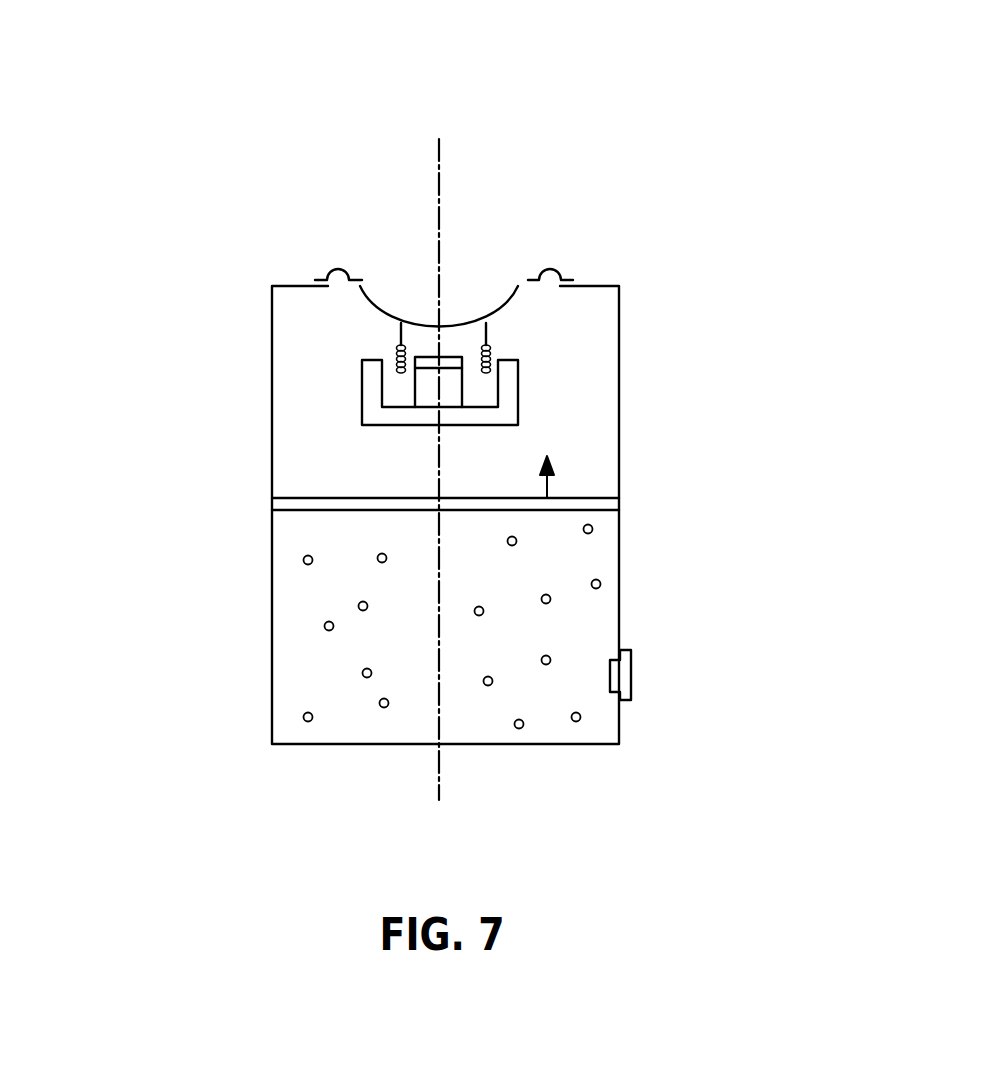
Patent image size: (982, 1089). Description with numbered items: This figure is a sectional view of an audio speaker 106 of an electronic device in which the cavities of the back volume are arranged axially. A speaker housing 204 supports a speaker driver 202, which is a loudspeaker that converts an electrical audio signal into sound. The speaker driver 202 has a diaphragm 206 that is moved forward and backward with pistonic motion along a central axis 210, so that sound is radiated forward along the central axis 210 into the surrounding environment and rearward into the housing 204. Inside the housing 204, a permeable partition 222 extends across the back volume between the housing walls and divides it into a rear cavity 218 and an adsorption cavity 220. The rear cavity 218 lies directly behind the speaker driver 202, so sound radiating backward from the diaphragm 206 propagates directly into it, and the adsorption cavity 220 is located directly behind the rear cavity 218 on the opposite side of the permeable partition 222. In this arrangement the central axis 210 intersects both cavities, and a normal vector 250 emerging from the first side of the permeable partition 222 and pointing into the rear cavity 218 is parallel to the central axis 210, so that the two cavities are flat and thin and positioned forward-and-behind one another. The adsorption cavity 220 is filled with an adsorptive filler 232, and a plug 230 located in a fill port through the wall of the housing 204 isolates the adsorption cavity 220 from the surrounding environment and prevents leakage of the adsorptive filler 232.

The audio speaker 106 is at (640, 66).
The speaker driver 202 is at (341, 314).
The speaker housing 204 is at (619, 367).
The diaphragm 206 is at (472, 265).
The central axis 210 is at (439, 183).
The rear cavity 218 is at (291, 423).
The adsorption cavity 220 is at (297, 675).
The permeable partition 222 is at (533, 505).
The plug 230 is at (628, 675).
The adsorptive filler 232 is at (508, 543).
The normal vector 250 is at (547, 480).